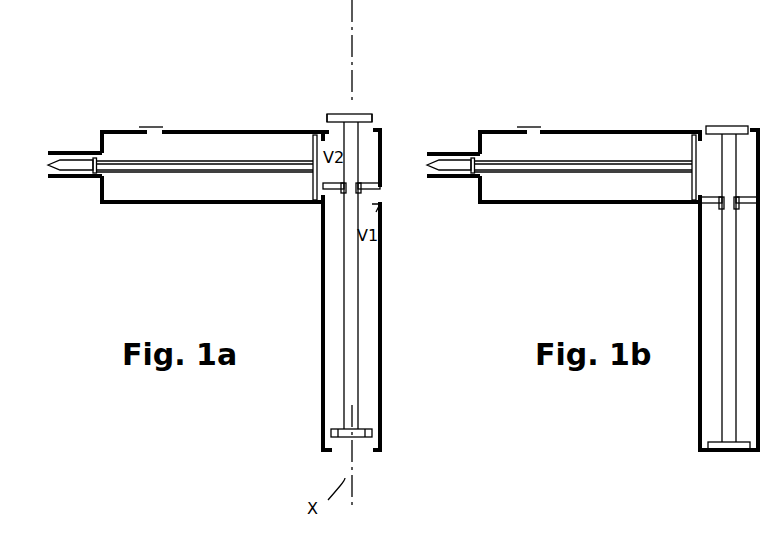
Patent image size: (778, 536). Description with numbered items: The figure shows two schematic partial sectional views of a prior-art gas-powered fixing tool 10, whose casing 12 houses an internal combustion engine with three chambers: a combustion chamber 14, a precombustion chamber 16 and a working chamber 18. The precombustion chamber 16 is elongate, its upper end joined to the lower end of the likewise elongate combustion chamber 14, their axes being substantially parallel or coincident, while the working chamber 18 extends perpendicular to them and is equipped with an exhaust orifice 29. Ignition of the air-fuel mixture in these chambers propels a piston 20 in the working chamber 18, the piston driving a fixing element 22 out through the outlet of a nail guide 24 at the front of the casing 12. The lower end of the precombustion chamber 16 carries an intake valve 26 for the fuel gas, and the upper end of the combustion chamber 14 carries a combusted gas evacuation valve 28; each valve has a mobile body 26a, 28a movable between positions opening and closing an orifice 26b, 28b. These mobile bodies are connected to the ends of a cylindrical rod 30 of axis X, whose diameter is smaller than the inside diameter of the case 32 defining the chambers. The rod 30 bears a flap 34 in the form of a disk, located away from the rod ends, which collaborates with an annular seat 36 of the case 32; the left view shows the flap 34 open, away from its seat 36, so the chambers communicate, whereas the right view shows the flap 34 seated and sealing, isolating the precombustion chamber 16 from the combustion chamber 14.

The fixing tool 10 is at (233, 252).
The casing 12 is at (304, 322).
The combustion chamber 14 is at (386, 143).
The precombustion chamber 16 is at (372, 366).
The working chamber 18 is at (253, 146).
The piston 20 is at (173, 168).
The fixing element 22 is at (74, 166).
The nail guide 24 is at (70, 178).
The intake valve 26 is at (363, 453).
The mobile body 26a is at (366, 424).
The orifice 26b is at (341, 445).
The combusted gas evacuation valve 28 is at (345, 99).
The mobile body 28a is at (333, 112).
The orifice 28b is at (365, 112).
The exhaust orifice 29 is at (153, 124).
The cylindrical rod 30 is at (342, 320).
The case 32 is at (386, 265).
The flap 34 is at (380, 179).
The annular seat 36 is at (380, 208).